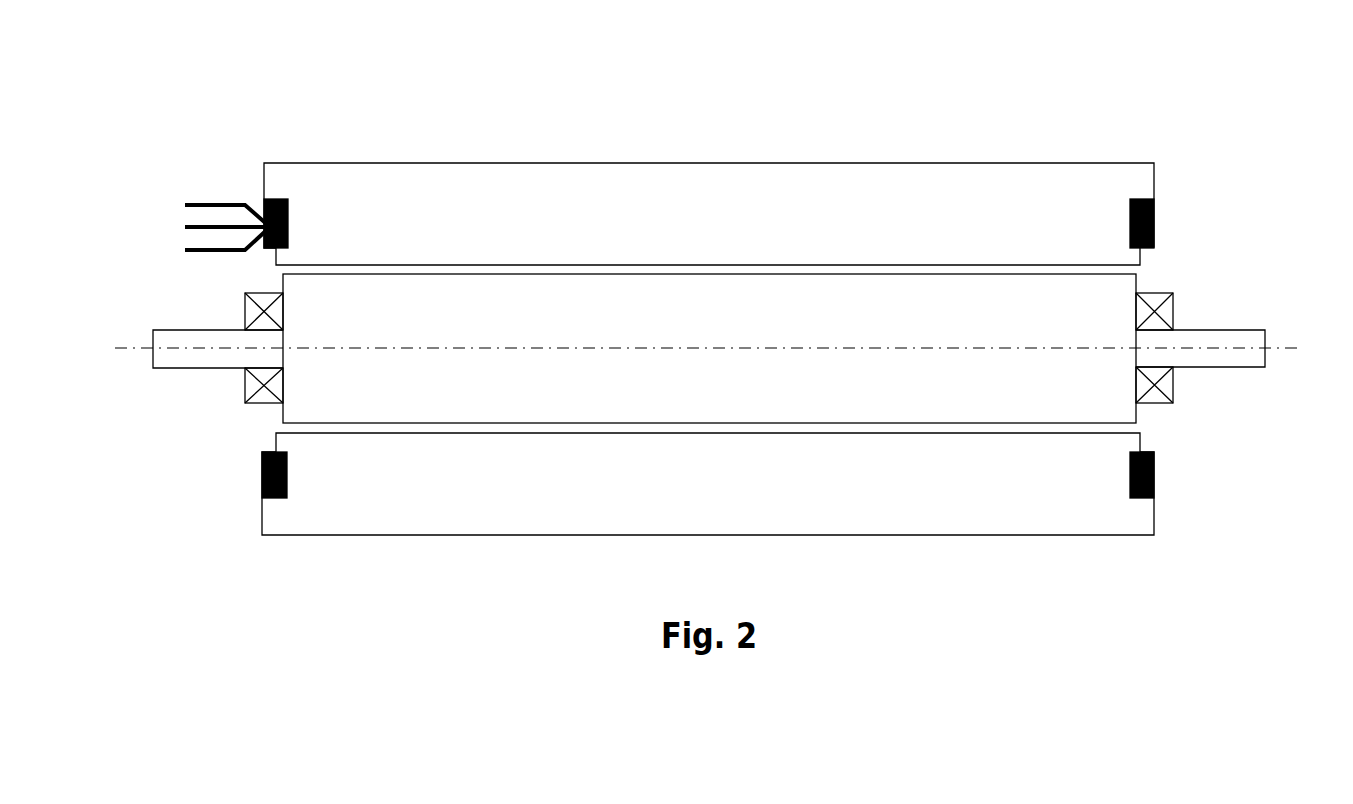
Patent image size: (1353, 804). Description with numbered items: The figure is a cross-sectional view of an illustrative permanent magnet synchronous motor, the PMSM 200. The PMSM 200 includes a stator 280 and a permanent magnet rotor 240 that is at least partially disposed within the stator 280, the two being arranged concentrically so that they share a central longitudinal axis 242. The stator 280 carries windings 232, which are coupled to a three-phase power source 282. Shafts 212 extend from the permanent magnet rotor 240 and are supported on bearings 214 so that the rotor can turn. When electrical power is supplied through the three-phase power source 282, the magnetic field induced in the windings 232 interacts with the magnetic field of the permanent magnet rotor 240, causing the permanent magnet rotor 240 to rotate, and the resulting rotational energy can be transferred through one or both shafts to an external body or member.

The PMSM 200 is at (224, 76).
The shafts 212 is at (182, 358).
The bearings 214 is at (250, 392).
The windings 232 is at (1150, 216).
The permanent magnet rotor 240 is at (1112, 412).
The central longitudinal axis 242 is at (1278, 350).
The stator 280 is at (961, 176).
The three-phase power source 282 is at (203, 206).